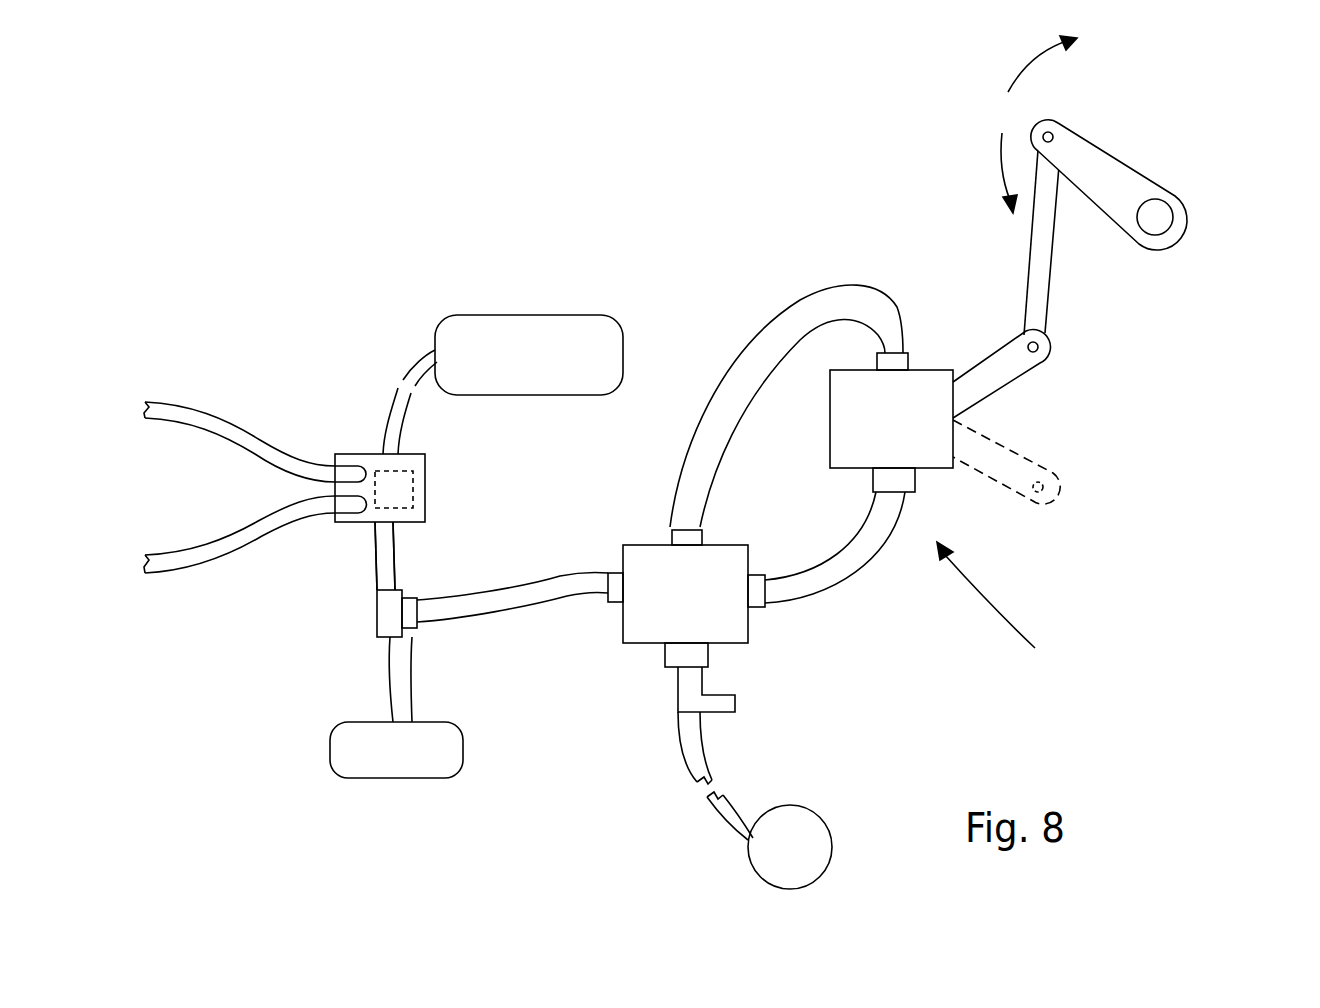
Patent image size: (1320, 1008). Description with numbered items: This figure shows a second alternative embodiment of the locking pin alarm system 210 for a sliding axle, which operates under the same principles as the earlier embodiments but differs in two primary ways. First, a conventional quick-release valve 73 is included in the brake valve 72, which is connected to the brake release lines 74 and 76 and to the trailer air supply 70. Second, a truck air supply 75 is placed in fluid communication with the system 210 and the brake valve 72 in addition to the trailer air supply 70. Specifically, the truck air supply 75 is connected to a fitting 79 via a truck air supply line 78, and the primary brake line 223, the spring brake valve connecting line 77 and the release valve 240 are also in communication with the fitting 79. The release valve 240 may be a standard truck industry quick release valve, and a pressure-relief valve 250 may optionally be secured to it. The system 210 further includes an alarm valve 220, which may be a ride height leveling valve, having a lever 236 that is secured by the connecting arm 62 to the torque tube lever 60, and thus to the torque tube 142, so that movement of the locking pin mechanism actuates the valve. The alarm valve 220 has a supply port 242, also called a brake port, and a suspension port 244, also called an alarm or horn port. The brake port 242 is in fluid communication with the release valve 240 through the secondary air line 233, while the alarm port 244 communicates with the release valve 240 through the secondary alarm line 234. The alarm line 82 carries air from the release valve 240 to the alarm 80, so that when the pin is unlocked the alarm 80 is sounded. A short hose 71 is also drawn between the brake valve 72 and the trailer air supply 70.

The torque tube lever 60 is at (1093, 147).
The connecting arm 62 is at (1050, 253).
The trailer air supply 70 is at (568, 395).
The trailer supply hose 71 is at (397, 428).
The brake valve 72 is at (407, 518).
The quick-release valve 73 is at (406, 486).
The brake release line 74 is at (181, 410).
The truck air supply 75 is at (330, 750).
The brake release line 76 is at (202, 557).
The spring brake valve connecting line 77 is at (378, 560).
The truck air supply line 78 is at (412, 677).
The fitting 79 is at (387, 615).
The alarm 80 is at (757, 877).
The alarm line 82 is at (683, 753).
The torque tube 142 is at (1157, 213).
The locking pin alarm system 210 is at (1010, 603).
The alarm valve 220 is at (948, 470).
The primary brake line 223 is at (550, 595).
The secondary air line 233 is at (870, 567).
The secondary alarm line 234 is at (718, 387).
The lever 236 is at (987, 362).
The release valve 240 is at (650, 545).
The supply port 242 is at (890, 484).
The suspension port 244 is at (908, 353).
The pressure-relief valve 250 is at (717, 693).